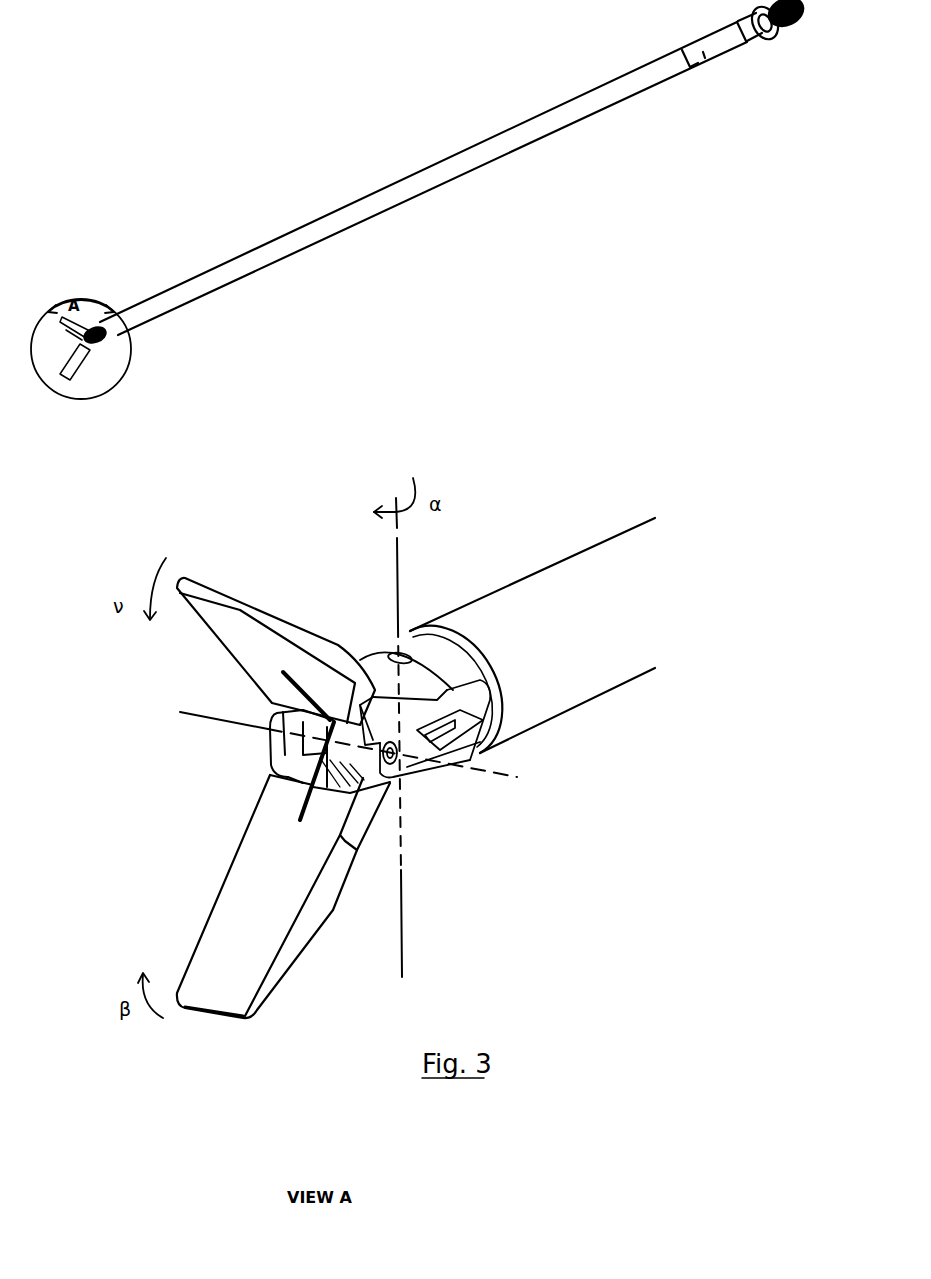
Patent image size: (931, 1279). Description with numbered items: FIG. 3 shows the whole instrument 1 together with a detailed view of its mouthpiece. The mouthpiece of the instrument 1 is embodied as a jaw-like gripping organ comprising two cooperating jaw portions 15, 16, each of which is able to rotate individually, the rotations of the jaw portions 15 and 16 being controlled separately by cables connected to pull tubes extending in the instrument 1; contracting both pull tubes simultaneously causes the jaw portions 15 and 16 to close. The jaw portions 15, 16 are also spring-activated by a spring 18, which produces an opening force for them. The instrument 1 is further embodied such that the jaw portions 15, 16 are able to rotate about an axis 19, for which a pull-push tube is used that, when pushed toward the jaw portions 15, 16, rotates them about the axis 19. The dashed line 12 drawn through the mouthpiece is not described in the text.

The instrument 1 is at (587, 677).
The longitudinal axis of the tube 12 is at (525, 785).
The jaw portion 15 is at (298, 937).
The jaw portion 16 is at (268, 614).
The spring 18 is at (300, 805).
The axis 19 is at (397, 558).